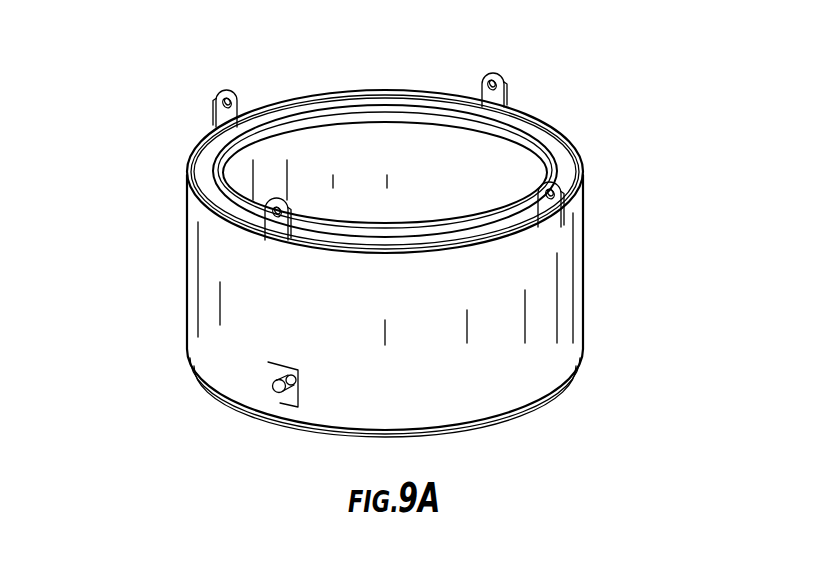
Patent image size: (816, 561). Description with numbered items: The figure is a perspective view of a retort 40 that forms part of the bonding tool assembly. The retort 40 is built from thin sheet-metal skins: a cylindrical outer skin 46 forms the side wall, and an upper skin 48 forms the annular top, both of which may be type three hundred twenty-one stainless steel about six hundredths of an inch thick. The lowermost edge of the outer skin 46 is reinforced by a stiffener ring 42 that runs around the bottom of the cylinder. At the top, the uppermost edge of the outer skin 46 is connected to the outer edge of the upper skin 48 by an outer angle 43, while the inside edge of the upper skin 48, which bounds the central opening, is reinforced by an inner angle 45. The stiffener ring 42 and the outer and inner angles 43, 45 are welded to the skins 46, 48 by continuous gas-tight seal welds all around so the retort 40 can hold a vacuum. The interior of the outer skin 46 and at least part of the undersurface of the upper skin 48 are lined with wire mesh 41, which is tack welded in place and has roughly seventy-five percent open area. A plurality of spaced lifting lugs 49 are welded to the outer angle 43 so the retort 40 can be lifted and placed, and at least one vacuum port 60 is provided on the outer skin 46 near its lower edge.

The retort 40 is at (147, 56).
The wire mesh 41 is at (378, 181).
The stiffener ring 42 is at (572, 383).
The outer angle 43 is at (584, 158).
The inner angle 45 is at (538, 142).
The outer skin 46 is at (583, 262).
The upper skin 48 is at (290, 113).
The lifting lugs 49 is at (493, 72).
The vacuum port 60 is at (278, 386).